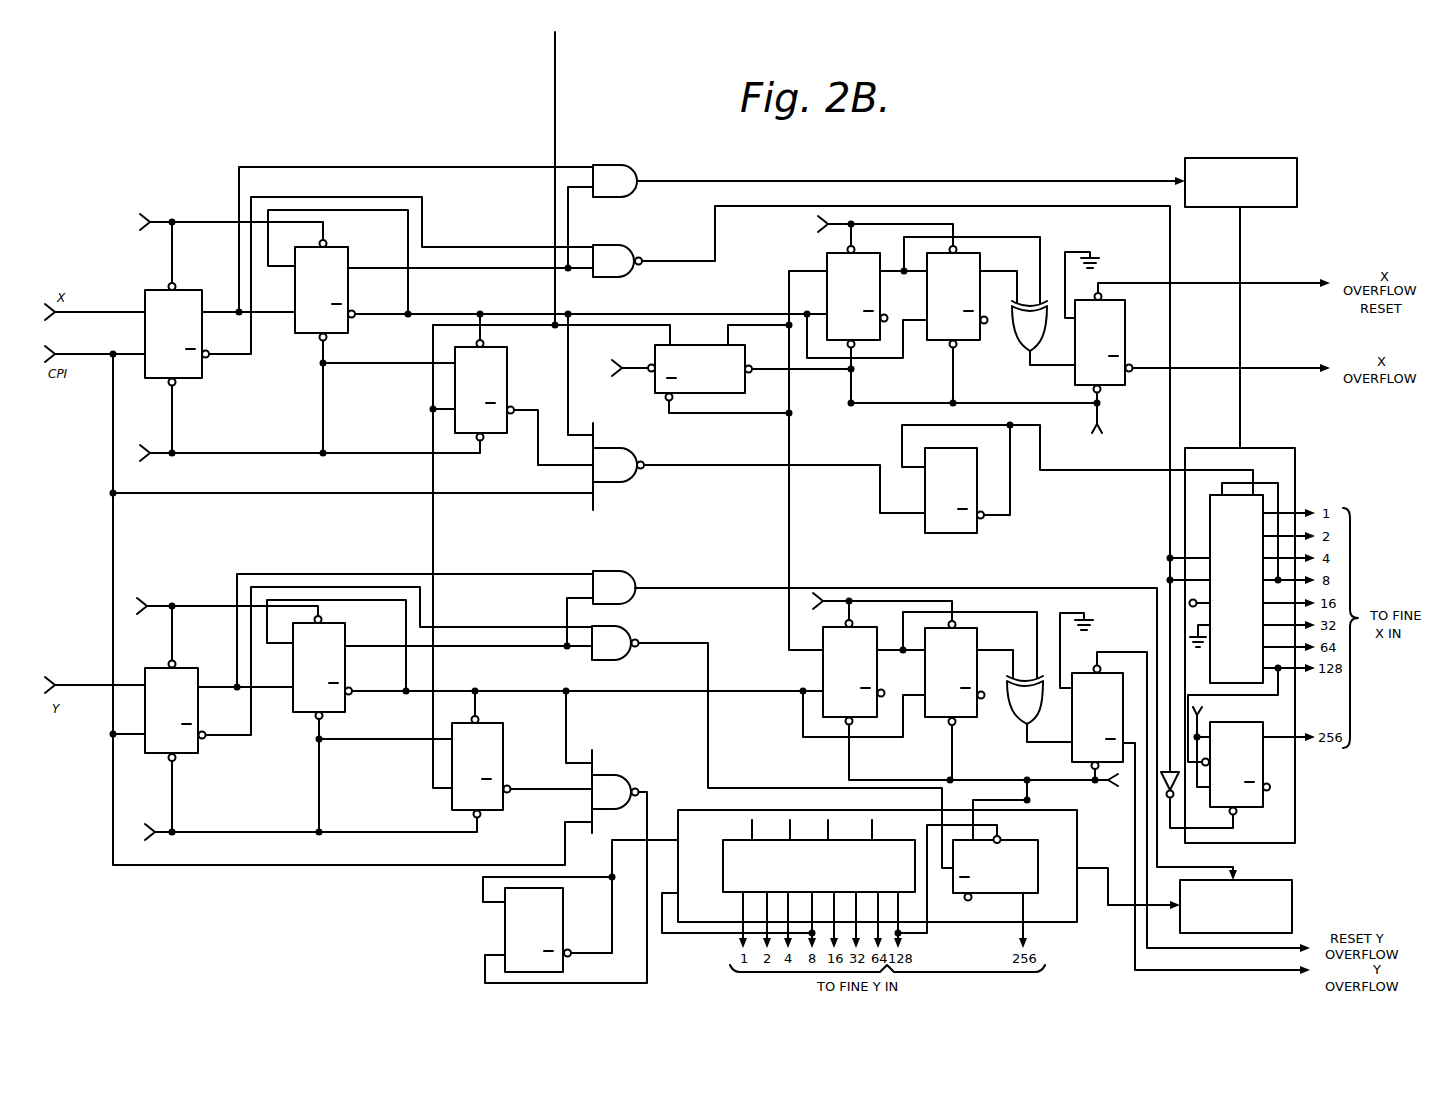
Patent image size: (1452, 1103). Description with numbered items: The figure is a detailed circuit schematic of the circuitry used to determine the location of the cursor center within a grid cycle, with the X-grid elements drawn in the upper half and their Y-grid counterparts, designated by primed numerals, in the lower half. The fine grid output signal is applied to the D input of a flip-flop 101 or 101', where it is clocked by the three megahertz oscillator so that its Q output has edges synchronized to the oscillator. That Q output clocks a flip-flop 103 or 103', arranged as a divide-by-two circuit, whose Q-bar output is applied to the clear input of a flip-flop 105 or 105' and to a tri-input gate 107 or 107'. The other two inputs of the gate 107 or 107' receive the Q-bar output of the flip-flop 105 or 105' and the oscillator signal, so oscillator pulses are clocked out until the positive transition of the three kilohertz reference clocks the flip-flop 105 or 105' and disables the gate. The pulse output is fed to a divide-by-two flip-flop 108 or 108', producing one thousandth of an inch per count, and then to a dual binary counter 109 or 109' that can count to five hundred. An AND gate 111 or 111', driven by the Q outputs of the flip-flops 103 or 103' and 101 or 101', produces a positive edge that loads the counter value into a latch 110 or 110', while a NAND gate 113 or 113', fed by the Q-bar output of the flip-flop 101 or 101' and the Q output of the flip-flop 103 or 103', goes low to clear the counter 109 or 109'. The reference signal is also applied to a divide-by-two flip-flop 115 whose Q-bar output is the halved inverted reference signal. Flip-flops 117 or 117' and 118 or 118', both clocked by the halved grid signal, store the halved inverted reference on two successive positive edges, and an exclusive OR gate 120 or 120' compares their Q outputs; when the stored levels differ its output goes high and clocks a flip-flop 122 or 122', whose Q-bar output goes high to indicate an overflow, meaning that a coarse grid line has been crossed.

The flip-flop 101 is at (151, 317).
The flip-flop 103 is at (342, 281).
The flip-flop 105 is at (493, 414).
The tri-input gate 107 is at (628, 469).
The flip-flop 108 is at (958, 511).
The dual binary counter 109 is at (1272, 641).
The latch 110 is at (1276, 182).
The AND gate 111 is at (646, 172).
The NAND gate 113 is at (636, 242).
The flip-flop 115 is at (712, 395).
The flip-flop 117 is at (824, 292).
The flip-flop 118 is at (969, 315).
The exclusive OR gate 120 is at (1061, 286).
The flip-flop 122 is at (1113, 364).
The flip-flop 101' is at (164, 693).
The flip-flop 103' is at (343, 659).
The flip-flop 105' is at (503, 765).
The tri-input gate 107' is at (631, 789).
The flip-flop 108' is at (496, 930).
The dual binary counter 109' is at (897, 886).
The latch 110' is at (1277, 901).
The AND gate 111' is at (649, 572).
The NAND gate 113' is at (648, 631).
The flip-flop 117' is at (812, 672).
The flip-flop 118' is at (941, 695).
The exclusive OR gate 120' is at (1010, 713).
The flip-flop 122' is at (1063, 720).